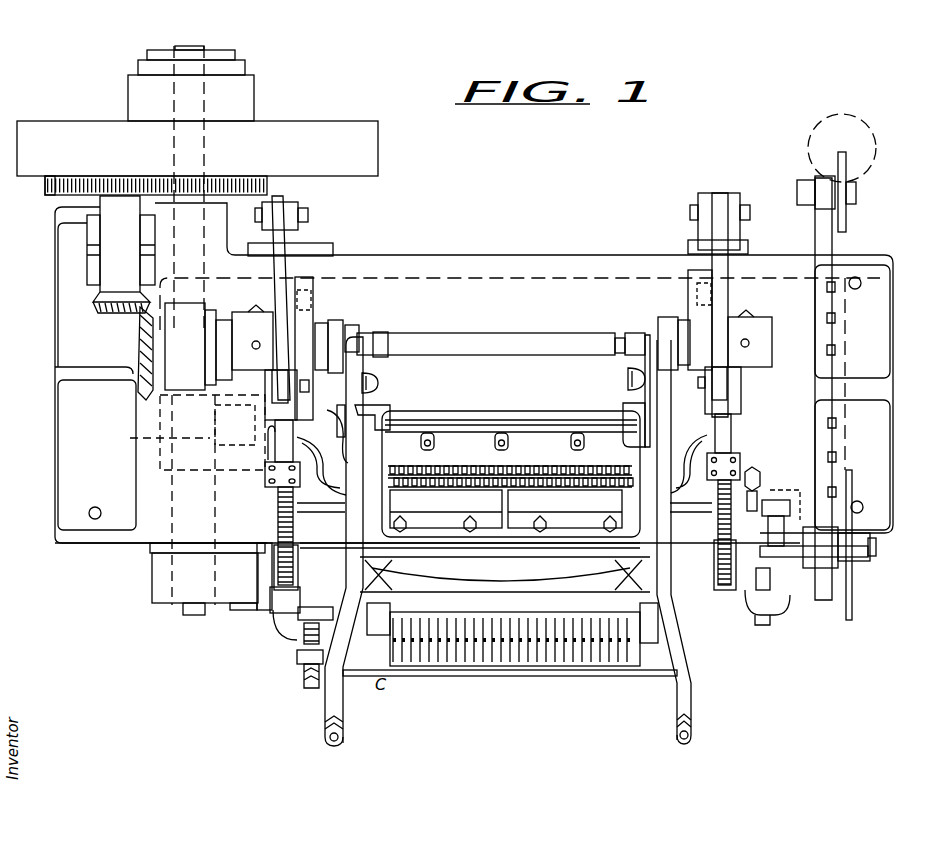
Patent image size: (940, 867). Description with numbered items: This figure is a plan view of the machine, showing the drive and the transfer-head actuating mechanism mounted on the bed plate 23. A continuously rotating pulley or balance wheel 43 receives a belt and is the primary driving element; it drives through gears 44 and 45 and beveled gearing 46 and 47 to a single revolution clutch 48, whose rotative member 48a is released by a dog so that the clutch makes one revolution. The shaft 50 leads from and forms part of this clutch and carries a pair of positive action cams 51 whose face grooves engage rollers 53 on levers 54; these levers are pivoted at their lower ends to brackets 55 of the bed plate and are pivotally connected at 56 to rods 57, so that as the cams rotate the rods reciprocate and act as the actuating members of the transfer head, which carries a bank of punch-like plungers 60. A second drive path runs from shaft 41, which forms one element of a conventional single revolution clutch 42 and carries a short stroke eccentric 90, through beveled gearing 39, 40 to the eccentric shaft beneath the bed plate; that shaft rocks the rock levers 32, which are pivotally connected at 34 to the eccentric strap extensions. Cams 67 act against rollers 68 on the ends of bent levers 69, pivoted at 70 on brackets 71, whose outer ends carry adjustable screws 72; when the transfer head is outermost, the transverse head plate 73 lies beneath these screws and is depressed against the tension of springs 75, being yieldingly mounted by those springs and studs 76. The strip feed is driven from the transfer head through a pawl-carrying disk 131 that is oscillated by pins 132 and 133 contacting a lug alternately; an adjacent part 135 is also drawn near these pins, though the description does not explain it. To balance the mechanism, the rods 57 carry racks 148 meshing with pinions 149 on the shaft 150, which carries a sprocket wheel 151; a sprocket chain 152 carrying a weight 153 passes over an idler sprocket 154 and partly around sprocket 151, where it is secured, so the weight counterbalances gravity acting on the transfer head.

The bed plate 23 is at (474, 432).
The rock levers 32 is at (612, 418).
The pivotal connection 34 is at (392, 413).
The beveled gearing 39 is at (212, 442).
The beveled gearing 40 is at (162, 414).
The shaft 41 is at (152, 439).
The single revolution clutch 42 is at (140, 69).
The pulley or balance wheel 43 is at (378, 153).
The gear 44 is at (268, 186).
The gear 45 is at (45, 190).
The beveled gearing 46 is at (106, 313).
The beveled gearing 47 is at (140, 391).
The single revolution clutch 48 is at (219, 346).
The rotative member 48a is at (210, 343).
The shaft 50 is at (497, 351).
The cams 51 is at (302, 320).
The rollers 53 is at (310, 292).
The levers 54 is at (290, 246).
The brackets 55 is at (308, 213).
The pivotal connection 56 is at (309, 386).
The rods 57 is at (724, 422).
The plungers 60 is at (530, 645).
The cams 67 is at (352, 328).
The rollers 68 is at (336, 340).
The bent levers 69 is at (364, 401).
The pivot 70 is at (385, 575).
The brackets 71 is at (332, 580).
The adjustable screws 72 is at (345, 738).
The transverse head plate 73 is at (447, 676).
The springs 75 is at (304, 637).
The studs 76 is at (320, 650).
The short stroke eccentric 90 is at (152, 584).
The pawl-carrying disk 131 is at (834, 547).
The pin 132 is at (770, 602).
The pin 133 is at (760, 500).
The bracket 135 is at (774, 507).
The racks 148 is at (718, 497).
The pinions 149 is at (740, 565).
The shaft 150 is at (536, 549).
The sprocket wheel 151 is at (853, 601).
The sprocket chain 152 is at (850, 373).
The weight 153 is at (872, 135).
The idler sprocket 154 is at (850, 172).